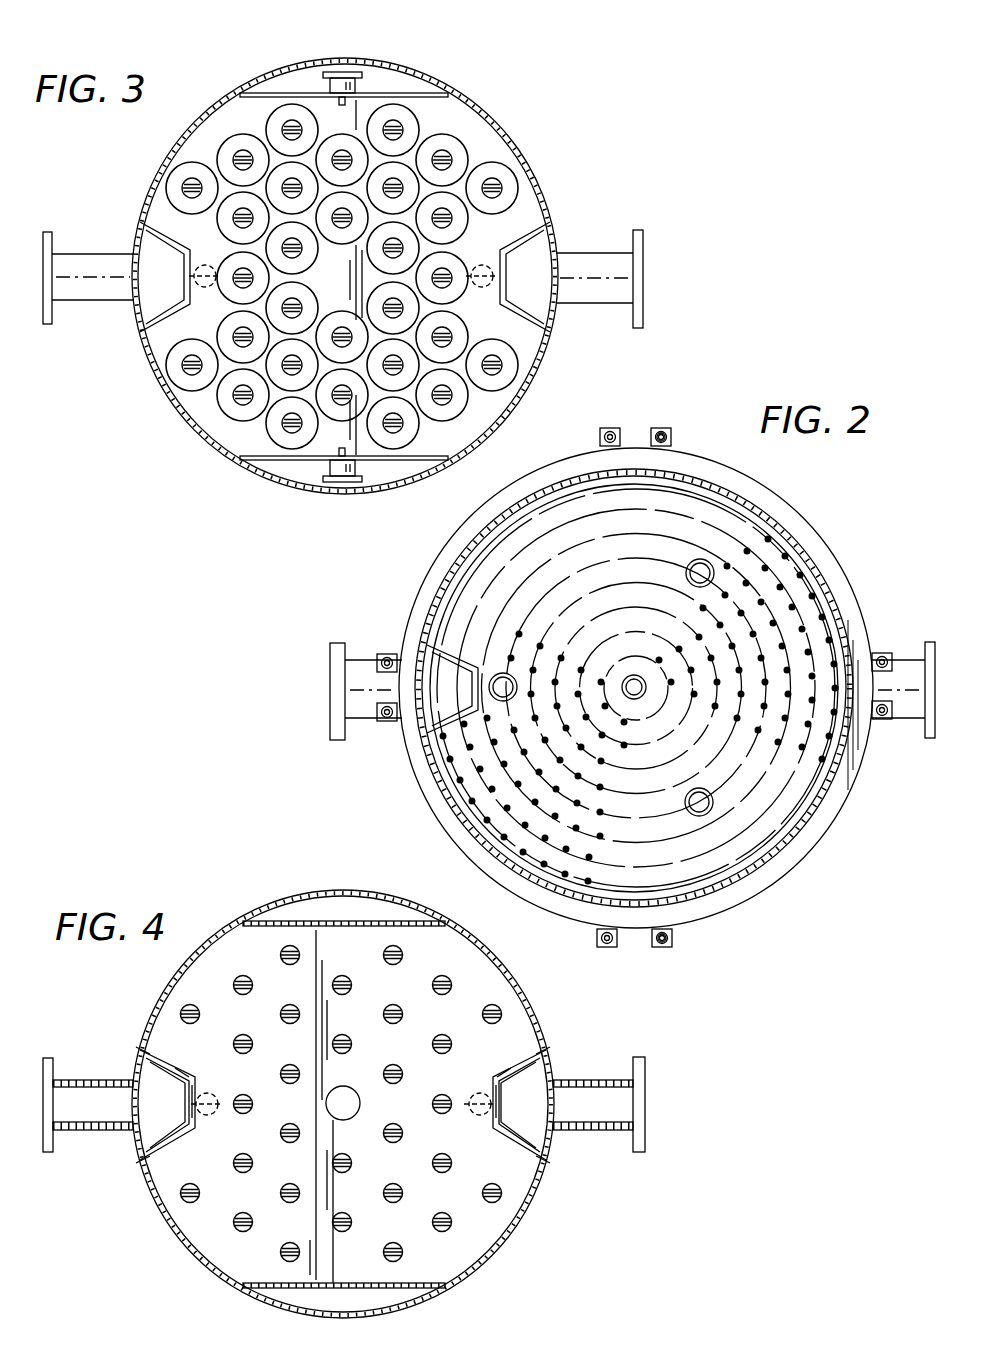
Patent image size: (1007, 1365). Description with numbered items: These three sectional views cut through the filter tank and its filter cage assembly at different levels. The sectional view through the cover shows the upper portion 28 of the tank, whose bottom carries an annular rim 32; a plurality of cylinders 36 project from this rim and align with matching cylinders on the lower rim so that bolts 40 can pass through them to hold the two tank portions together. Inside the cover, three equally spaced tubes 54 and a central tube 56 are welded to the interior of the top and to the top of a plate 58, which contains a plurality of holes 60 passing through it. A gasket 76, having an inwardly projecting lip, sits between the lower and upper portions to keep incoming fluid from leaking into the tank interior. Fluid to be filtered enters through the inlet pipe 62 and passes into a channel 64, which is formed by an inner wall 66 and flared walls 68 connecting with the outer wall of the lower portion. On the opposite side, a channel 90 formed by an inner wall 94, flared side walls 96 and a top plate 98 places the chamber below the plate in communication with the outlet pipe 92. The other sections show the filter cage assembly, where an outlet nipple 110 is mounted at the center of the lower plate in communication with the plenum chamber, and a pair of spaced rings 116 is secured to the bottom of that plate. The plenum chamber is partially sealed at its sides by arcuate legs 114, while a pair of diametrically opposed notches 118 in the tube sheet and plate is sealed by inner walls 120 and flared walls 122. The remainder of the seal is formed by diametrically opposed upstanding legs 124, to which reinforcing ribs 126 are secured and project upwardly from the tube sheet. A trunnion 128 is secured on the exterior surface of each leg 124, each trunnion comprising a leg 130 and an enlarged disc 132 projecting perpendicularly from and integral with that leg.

In FIG. 2, the upper portion 28 is at (824, 790).
In FIG. 2, the annular rim 32 is at (810, 842).
In FIG. 2, the cylinders 36 is at (662, 428).
In FIG. 2, the bolts 40 is at (672, 438).
In FIG. 2, the tubes 54 is at (688, 567).
In FIG. 2, the tube 56 is at (637, 676).
In FIG. 2, the plate 58 is at (795, 562).
In FIG. 2, the holes 60 is at (823, 634).
In FIG. 3, the pipe 62 is at (72, 254).
In FIG. 2, the pipe 62 is at (348, 660).
In FIG. 4, the pipe 62 is at (72, 1080).
In FIG. 3, the channel 64 is at (112, 302).
In FIG. 4, the channel 64 is at (135, 1126).
In FIG. 3, the inner wall 66 is at (182, 292).
In FIG. 4, the inner wall 66 is at (185, 1102).
In FIG. 3, the flared walls 68 is at (142, 234).
In FIG. 4, the flared walls 68 is at (140, 1058).
In FIG. 2, the gasket 76 is at (468, 680).
In FIG. 4, the channel 90 is at (550, 1115).
In FIG. 3, the outlet pipe 92 is at (592, 304).
In FIG. 2, the outlet pipe 92 is at (905, 720).
In FIG. 4, the outlet pipe 92 is at (634, 1080).
In FIG. 4, the inner wall 94 is at (505, 1098).
In FIG. 4, the flared side walls 96 is at (590, 1052).
In FIG. 3, the top plate 98 is at (542, 238).
In FIG. 4, the outlet nipple 110 is at (343, 1088).
In FIG. 4, the arcuate legs 114 is at (180, 948).
In FIG. 3, the rings 116 is at (198, 288).
In FIG. 4, the rings 116 is at (213, 1116).
In FIG. 4, the notches 118 is at (192, 1074).
In FIG. 4, the inner walls 120 is at (196, 1090).
In FIG. 4, the flared walls 122 is at (162, 1026).
In FIG. 3, the upstanding legs 124 is at (383, 93).
In FIG. 4, the upstanding legs 124 is at (260, 920).
In FIG. 3, the reinforcing ribs 126 is at (372, 106).
In FIG. 3, the trunnion 128 is at (352, 80).
In FIG. 3, the leg 130 is at (330, 80).
In FIG. 3, the enlarged disc 132 is at (330, 72).